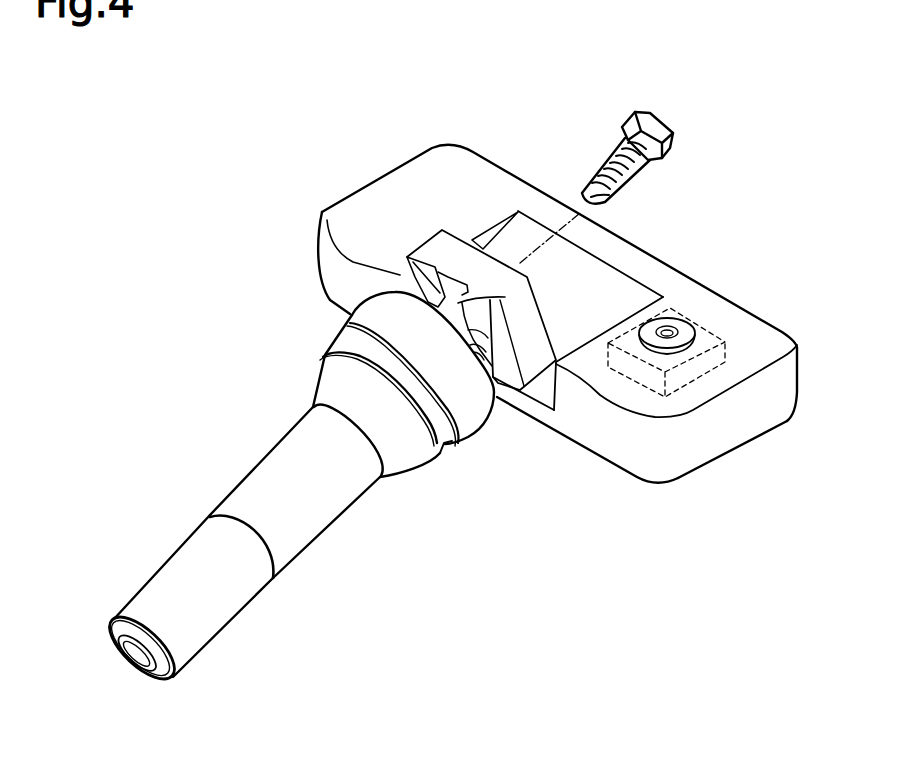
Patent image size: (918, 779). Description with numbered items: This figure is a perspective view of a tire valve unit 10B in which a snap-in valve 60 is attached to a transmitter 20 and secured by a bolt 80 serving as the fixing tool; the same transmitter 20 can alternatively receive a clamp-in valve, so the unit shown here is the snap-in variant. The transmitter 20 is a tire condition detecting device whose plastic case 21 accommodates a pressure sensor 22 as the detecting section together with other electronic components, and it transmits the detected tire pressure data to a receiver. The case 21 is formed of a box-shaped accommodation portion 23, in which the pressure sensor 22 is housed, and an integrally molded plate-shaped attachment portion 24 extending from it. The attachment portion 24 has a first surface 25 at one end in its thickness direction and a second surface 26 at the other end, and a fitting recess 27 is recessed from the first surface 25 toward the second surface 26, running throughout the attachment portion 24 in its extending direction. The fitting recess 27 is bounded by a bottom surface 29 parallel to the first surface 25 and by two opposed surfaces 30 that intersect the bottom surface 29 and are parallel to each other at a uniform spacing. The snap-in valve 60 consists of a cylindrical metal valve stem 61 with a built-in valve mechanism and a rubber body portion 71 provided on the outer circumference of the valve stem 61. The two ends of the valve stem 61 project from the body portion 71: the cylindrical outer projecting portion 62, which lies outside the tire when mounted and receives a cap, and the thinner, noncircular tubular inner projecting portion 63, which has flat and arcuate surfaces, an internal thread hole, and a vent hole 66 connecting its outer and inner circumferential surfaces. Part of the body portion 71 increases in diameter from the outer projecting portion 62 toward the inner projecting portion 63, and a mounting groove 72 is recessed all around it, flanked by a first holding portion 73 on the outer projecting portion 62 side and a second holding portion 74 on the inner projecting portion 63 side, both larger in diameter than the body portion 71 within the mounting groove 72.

The tire valve unit 10B is at (202, 283).
The transmitter 20 is at (476, 146).
The case 21 is at (797, 413).
The pressure sensor 22 is at (713, 327).
The accommodation portion 23 is at (730, 437).
The attachment portion 24 is at (537, 368).
The first surface 25 is at (403, 275).
The second surface 26 is at (442, 282).
The fitting recess 27 is at (453, 280).
The bottom surface 29 is at (507, 267).
The opposed surfaces 30 is at (408, 262).
The snap-in valve 60 is at (228, 486).
The valve stem 61 is at (247, 600).
The outer projecting portion 62 is at (210, 620).
The inner projecting portion 63 is at (505, 297).
The vent hole 66 is at (480, 343).
The body portion 71 is at (386, 475).
The mounting groove 72 is at (445, 442).
The first holding portion 73 is at (323, 357).
The second holding portion 74 is at (355, 325).
The bolt 80 is at (672, 138).